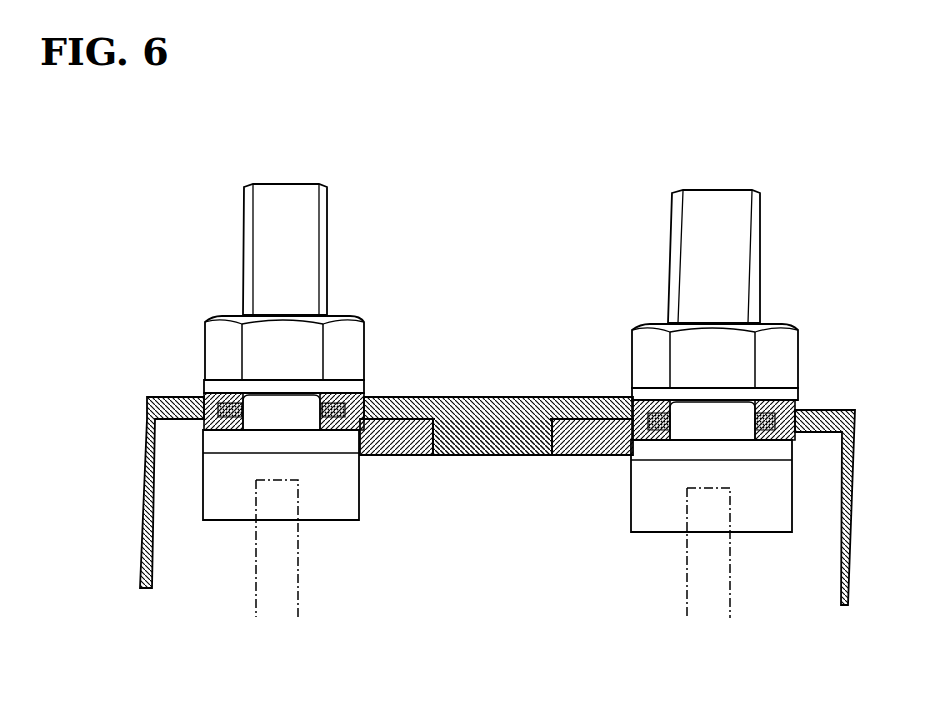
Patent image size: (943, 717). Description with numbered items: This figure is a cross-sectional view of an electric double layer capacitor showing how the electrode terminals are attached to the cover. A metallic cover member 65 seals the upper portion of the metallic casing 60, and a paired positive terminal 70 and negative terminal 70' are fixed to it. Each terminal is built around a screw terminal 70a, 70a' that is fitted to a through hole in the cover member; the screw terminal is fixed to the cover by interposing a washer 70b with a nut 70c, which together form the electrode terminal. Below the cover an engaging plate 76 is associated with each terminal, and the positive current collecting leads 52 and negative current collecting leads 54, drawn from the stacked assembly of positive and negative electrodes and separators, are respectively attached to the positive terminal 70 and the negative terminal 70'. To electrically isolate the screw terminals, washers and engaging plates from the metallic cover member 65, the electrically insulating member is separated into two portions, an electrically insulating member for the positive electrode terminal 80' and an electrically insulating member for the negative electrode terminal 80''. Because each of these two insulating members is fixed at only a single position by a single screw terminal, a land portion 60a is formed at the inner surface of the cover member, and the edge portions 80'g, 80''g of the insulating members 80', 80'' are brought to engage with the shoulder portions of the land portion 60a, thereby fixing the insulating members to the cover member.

The metallic casing 60 is at (147, 464).
The land portion 60a is at (492, 455).
The metallic cover member 65 is at (490, 402).
The positive terminal 70 is at (300, 285).
The screw terminal 70a is at (236, 243).
The washer 70b is at (347, 388).
The nut 70c is at (340, 338).
The negative terminal 70' is at (747, 301).
The screw terminal 70a' is at (682, 256).
The engaging plate 76 is at (317, 443).
The electrically insulating member for a positive electrode terminal 80' is at (418, 475).
The electrically insulating member for a negative electrode terminal 80'' is at (590, 470).
The edge portion 80'g is at (470, 365).
The edge portion 80''g is at (555, 374).
The positive current collecting leads 52 is at (298, 605).
The negative current collecting leads 54 is at (730, 606).